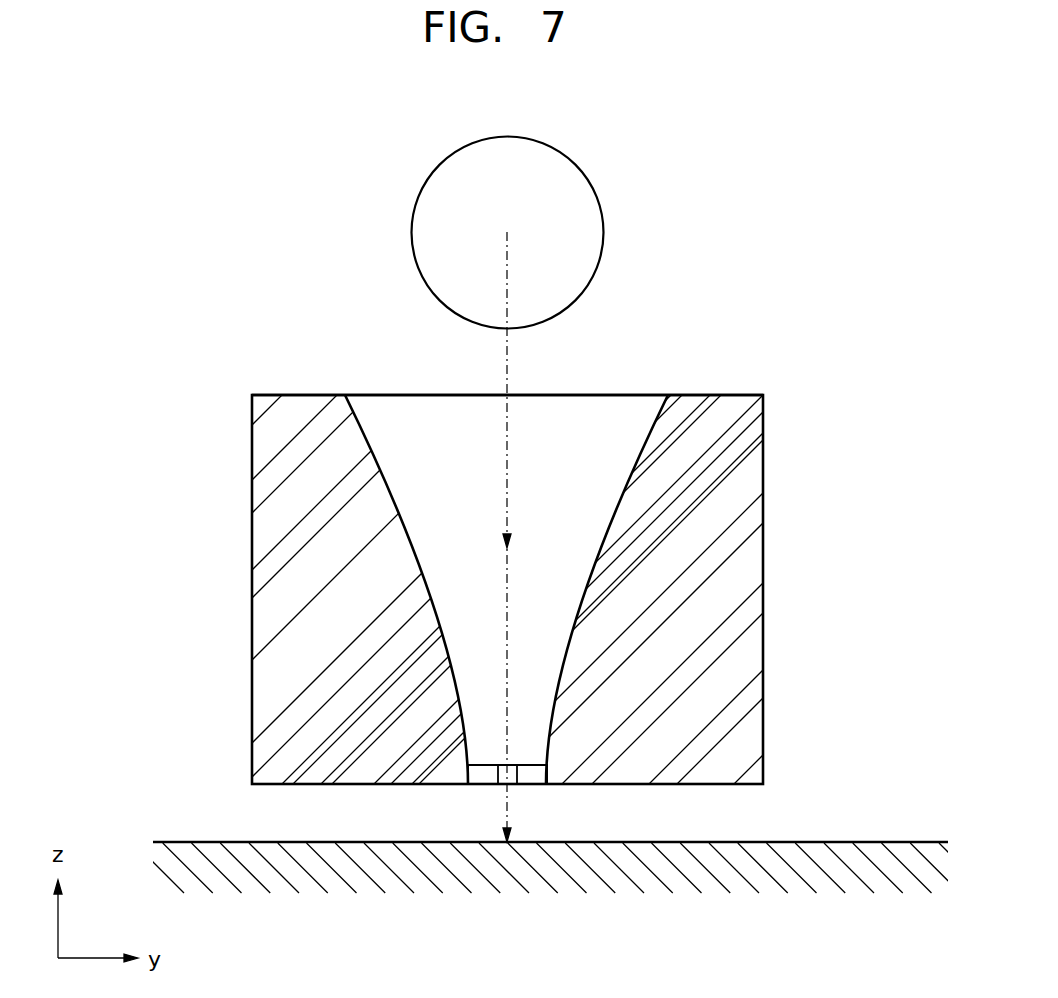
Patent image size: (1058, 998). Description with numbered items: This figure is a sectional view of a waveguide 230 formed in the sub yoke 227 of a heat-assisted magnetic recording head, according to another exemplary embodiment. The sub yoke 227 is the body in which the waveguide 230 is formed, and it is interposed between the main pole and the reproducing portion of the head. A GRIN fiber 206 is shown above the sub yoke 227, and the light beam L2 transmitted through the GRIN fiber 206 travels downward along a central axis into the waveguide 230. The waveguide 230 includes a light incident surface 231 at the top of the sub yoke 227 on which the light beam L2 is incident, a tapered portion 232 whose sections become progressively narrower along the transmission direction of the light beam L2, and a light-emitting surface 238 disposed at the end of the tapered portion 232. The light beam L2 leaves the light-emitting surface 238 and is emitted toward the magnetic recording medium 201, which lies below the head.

The GRIN fiber 206 is at (425, 222).
The light beam L2 is at (508, 362).
The waveguide 230 is at (529, 559).
The light incident surface 231 is at (385, 395).
The tapered portion 232 is at (387, 488).
The sub yoke 227 is at (764, 598).
The light-emitting surface 238 is at (358, 719).
The magnetic recording medium 201 is at (912, 842).